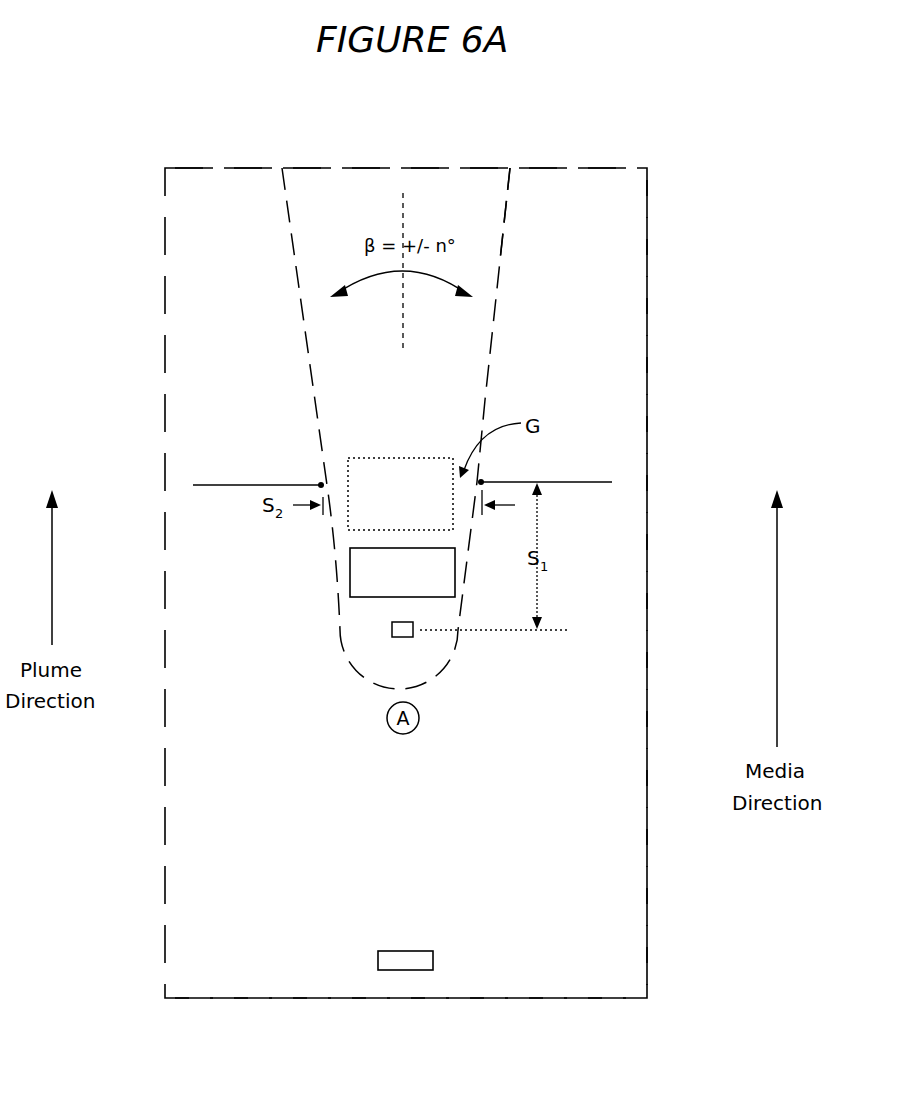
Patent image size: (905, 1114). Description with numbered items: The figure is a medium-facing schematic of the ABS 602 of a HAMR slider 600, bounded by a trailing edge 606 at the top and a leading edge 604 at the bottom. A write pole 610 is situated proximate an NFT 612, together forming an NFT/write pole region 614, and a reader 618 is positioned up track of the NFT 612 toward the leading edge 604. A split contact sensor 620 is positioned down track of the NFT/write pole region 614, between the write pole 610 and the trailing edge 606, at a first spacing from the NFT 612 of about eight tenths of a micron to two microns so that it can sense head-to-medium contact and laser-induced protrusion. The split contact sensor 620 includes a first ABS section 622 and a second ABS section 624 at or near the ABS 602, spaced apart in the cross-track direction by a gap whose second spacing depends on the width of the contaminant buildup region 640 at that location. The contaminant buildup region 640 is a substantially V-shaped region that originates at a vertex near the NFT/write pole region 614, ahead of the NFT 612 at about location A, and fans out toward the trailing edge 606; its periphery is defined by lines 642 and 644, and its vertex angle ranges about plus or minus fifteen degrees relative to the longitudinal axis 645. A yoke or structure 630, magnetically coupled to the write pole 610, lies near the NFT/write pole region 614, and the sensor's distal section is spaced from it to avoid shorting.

The slider 600 is at (163, 243).
The ABS 602 is at (603, 287).
The leading edge 604 is at (506, 1036).
The trailing edge 606 is at (494, 110).
The write pole 610 is at (348, 574).
The NFT 612 is at (403, 640).
The NFT/write pole region 614 is at (322, 641).
The reader 618 is at (413, 950).
The split contact sensor 620 is at (402, 430).
The first ABS section 622 is at (247, 485).
The second ABS section 624 is at (573, 482).
The yoke or structure 630 is at (400, 458).
The contaminant buildup region 640 is at (504, 230).
The line 642 is at (310, 350).
The line 644 is at (492, 350).
The longitudinal axis 645 is at (405, 308).